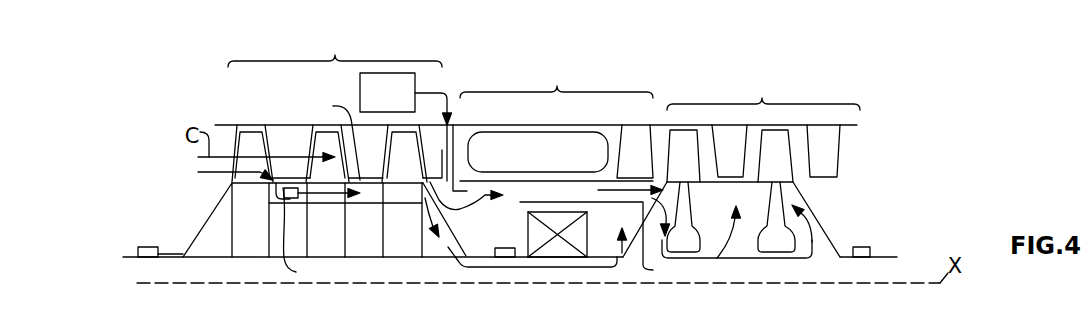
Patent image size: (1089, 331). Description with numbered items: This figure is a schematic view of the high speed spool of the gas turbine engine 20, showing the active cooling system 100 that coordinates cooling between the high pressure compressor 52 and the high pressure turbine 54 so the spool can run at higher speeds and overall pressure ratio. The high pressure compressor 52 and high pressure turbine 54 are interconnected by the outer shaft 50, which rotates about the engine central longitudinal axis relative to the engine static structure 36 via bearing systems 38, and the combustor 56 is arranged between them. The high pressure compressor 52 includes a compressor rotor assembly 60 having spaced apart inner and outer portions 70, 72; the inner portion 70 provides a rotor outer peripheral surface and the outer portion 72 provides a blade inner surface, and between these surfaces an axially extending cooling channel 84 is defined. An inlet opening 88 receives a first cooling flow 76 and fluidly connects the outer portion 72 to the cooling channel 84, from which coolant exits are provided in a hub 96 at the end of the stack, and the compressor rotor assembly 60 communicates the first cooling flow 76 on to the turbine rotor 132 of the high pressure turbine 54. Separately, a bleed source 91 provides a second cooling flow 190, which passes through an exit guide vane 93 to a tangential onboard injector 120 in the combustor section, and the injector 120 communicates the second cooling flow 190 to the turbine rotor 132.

The gas turbine engine 20 is at (772, 50).
The engine static structure 36 is at (230, 125).
The bearing systems 38 is at (582, 226).
The outer shaft 50 is at (396, 258).
The high pressure compressor 52 is at (335, 105).
The high pressure turbine 54 is at (761, 165).
The combustor 56 is at (556, 120).
The compressor rotor assembly 60 is at (185, 214).
The inner portion 70 is at (353, 204).
The outer portion 72 is at (335, 138).
The first cooling flow 76 is at (405, 193).
The cooling channel 84 is at (313, 204).
The inlet opening 88 is at (300, 236).
The bleed source 91 is at (406, 99).
The exit guide vane 93 is at (459, 133).
The hub 96 is at (466, 243).
The active cooling system 100 is at (485, 285).
The tangential onboard injector 120 is at (605, 232).
The turbine rotor 132 is at (692, 247).
The second cooling flow 190 is at (608, 188).